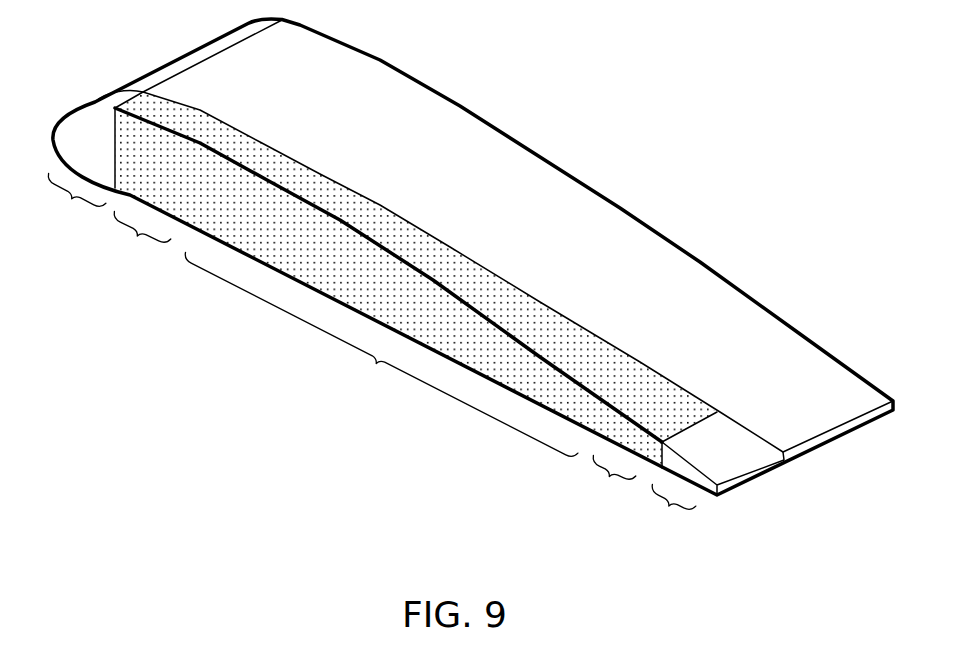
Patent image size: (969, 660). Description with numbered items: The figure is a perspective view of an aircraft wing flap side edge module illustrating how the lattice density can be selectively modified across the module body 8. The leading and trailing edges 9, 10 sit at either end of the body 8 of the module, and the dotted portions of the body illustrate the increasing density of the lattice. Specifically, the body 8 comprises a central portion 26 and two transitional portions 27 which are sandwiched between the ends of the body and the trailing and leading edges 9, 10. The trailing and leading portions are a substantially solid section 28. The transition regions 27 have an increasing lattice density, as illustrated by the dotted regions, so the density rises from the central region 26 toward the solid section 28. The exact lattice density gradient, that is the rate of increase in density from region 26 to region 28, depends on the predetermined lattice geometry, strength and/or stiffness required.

The module body 8 is at (632, 378).
The leading edge 9 is at (106, 100).
The trailing edge 10 is at (732, 467).
The central portion 26 is at (376, 364).
The transitional portions 27 is at (137, 236).
The substantially solid section 28 is at (72, 199).